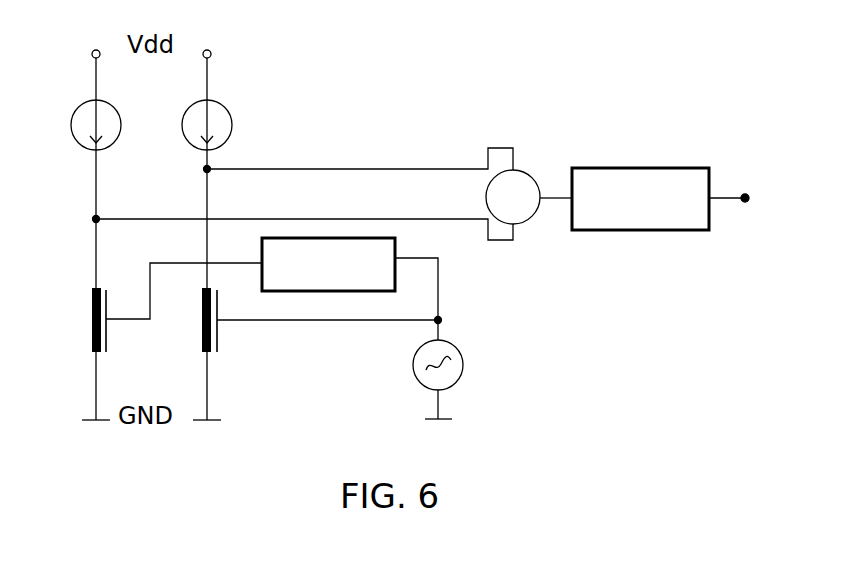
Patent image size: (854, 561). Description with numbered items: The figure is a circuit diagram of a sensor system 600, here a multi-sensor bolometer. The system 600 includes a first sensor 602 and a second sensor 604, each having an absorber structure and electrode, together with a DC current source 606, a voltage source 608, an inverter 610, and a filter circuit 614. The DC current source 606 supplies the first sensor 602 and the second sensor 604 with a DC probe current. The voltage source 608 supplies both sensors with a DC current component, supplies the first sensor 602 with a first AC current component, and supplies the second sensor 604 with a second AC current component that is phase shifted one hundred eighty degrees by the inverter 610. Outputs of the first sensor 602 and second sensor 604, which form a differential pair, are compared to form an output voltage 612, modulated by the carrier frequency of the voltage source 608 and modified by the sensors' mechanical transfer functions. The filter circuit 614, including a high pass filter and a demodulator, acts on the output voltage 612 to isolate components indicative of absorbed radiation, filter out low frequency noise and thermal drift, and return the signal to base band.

The sensor system 600 is at (326, 408).
The first sensor 602 is at (232, 347).
The second sensor 604 is at (85, 303).
The DC current source 606 is at (151, 100).
The voltage source 608 is at (469, 385).
The inverter 610 is at (338, 291).
The output voltage 612 is at (534, 220).
The filter circuit 614 is at (640, 225).